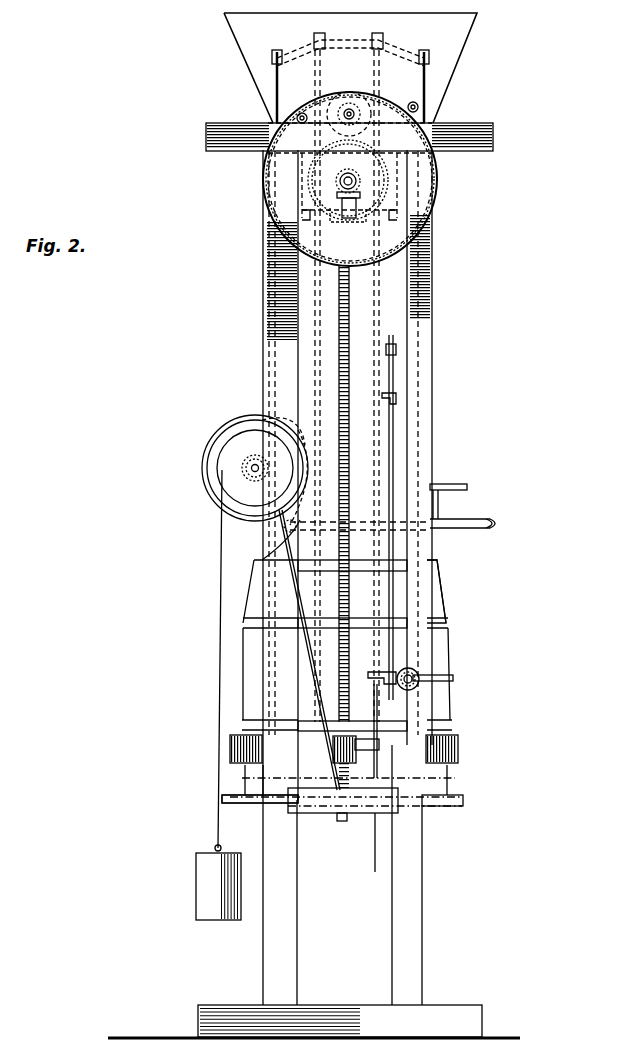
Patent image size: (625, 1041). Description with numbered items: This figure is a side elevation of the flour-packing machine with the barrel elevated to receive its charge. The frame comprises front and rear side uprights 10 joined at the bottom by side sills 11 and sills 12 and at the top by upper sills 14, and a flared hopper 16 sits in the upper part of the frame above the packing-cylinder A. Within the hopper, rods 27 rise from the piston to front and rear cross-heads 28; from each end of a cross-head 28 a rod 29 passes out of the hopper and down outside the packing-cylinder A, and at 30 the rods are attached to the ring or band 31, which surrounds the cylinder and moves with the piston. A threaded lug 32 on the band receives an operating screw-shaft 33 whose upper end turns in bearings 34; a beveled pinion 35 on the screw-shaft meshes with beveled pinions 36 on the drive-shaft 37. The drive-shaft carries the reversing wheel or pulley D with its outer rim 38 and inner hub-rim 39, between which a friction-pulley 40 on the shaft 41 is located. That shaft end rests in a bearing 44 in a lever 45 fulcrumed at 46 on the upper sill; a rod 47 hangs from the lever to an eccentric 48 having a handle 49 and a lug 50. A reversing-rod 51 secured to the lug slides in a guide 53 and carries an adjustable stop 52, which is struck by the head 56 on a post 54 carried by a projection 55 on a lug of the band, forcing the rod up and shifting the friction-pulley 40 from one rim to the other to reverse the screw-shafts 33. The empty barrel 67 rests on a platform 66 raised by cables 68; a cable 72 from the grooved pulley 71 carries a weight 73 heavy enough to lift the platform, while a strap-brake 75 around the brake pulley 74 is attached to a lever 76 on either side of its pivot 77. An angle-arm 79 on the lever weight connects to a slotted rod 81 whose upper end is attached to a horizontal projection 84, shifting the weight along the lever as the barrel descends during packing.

The side uprights 10 is at (342, 902).
The side sills 11 is at (348, 1005).
The sills 12 is at (382, 842).
The upper sills 14 is at (349, 137).
The hopper 16 is at (350, 68).
The rods 27 is at (317, 70).
The cross-heads 28 is at (360, 44).
The rods 29 is at (275, 109).
The attachment of exterior rods 30 is at (230, 751).
The ring or band 31 is at (243, 765).
The lug 32 is at (333, 751).
The operating screw-shaft 33 is at (346, 347).
The bearings 34 is at (312, 212).
The beveled pinion 35 is at (354, 210).
The beveled pinions 36 is at (344, 181).
The drive-shaft 37 is at (354, 179).
The outer rim 38 is at (265, 201).
The inner hub-rim 39 is at (336, 222).
The friction-pulley 40 is at (366, 127).
The shaft 41 is at (345, 109).
The bearing 44 is at (358, 103).
The lever 45 is at (411, 105).
The fulcrum 46 is at (302, 124).
The rod 47 is at (428, 302).
The eccentric 48 is at (406, 692).
The handle 49 is at (422, 670).
The lug 50 is at (392, 677).
The reversing-rod 51 is at (388, 601).
The stop 52 is at (386, 403).
The guide 53 is at (392, 344).
The post 54 is at (379, 745).
The projection 55 is at (358, 813).
The head 56 is at (372, 685).
The platform 66 is at (448, 807).
The empty barrel 67 is at (444, 598).
The cables 68 is at (316, 702).
The peripherally-grooved pulley 71 is at (255, 468).
The cable 72 is at (218, 635).
The weight 73 is at (196, 889).
The brake pulley 74 is at (204, 478).
The strap-brake 75 is at (236, 422).
The lever 76 is at (470, 530).
The pivot 77 is at (298, 531).
The angle-arm 79 is at (466, 520).
The slotted rod 81 is at (440, 504).
The horizontal projection 84 is at (458, 484).
The packing-cylinder A is at (433, 404).
The reversing wheel or pulley D is at (435, 189).